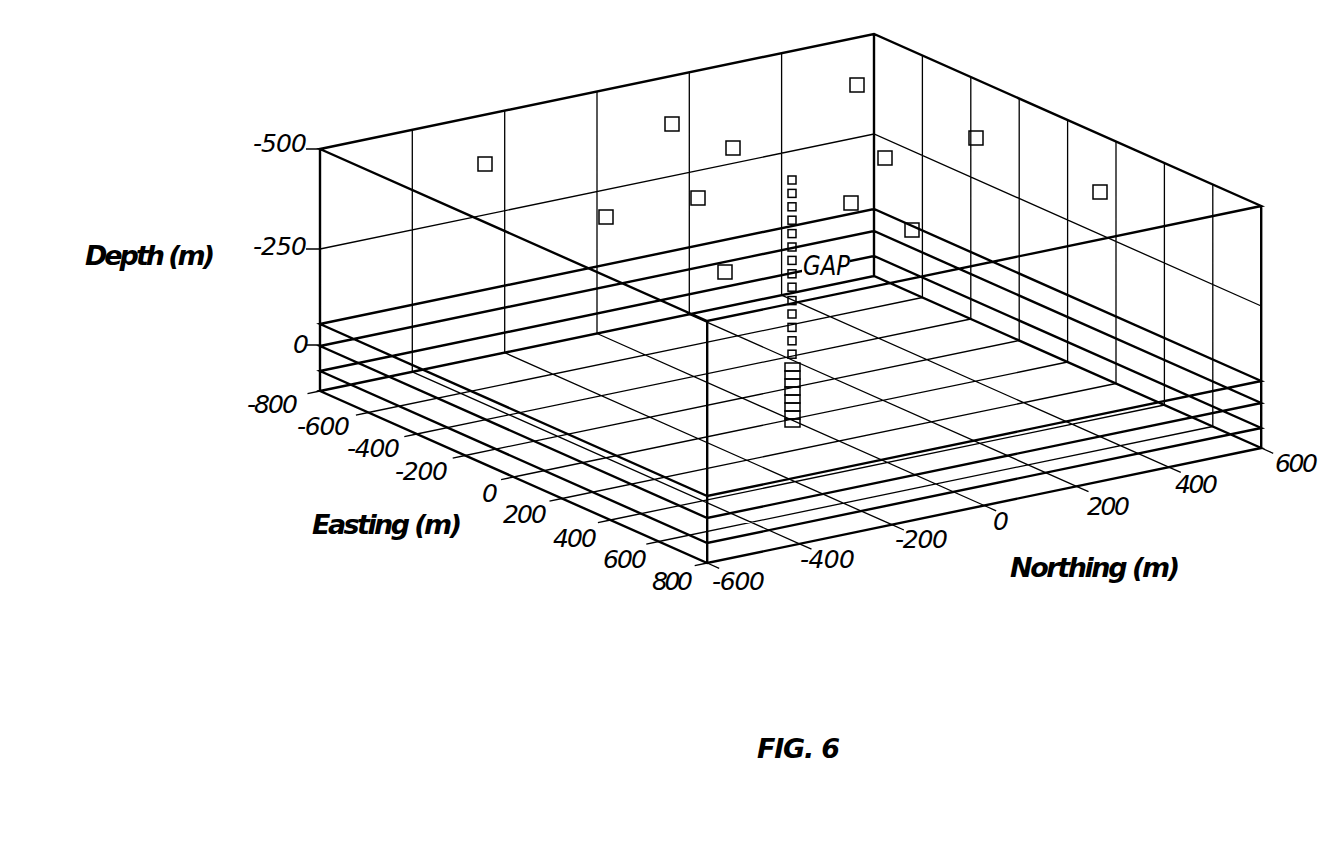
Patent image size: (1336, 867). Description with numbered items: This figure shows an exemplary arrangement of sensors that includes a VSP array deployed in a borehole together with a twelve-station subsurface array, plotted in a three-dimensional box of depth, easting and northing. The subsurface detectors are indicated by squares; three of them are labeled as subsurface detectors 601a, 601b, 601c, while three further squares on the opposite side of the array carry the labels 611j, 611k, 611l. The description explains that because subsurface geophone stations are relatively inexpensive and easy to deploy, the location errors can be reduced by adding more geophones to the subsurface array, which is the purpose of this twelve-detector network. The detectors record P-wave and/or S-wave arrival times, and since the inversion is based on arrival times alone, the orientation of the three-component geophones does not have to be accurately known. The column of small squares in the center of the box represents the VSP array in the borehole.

The subsurface detector 601a is at (865, 85).
The subsurface detector 601b is at (984, 138).
The subsurface detector 601c is at (1108, 192).
The receiver 611j is at (718, 270).
The receiver 611k is at (599, 218).
The receiver 611l is at (477, 163).